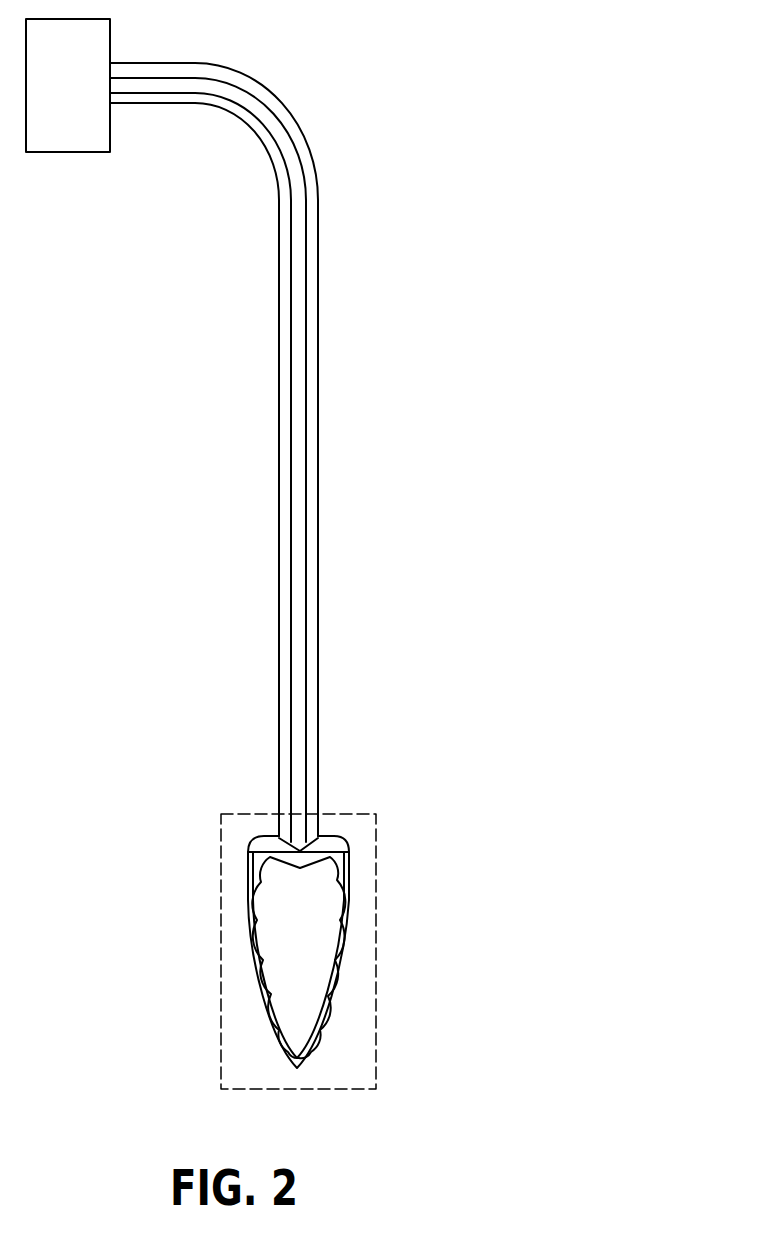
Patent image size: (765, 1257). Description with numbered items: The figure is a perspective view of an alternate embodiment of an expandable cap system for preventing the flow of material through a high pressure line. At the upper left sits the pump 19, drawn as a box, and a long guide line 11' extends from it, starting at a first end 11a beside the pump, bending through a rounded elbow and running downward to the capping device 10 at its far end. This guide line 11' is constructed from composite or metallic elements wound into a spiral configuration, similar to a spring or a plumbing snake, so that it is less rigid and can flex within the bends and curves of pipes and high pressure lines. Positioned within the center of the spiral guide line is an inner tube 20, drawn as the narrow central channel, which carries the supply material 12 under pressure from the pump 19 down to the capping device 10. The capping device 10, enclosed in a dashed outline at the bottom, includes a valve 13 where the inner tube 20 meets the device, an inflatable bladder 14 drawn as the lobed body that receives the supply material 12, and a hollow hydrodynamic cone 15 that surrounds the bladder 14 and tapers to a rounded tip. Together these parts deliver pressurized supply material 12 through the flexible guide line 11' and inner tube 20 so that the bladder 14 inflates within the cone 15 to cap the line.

The capping device 10 is at (220, 898).
The first end 11a is at (113, 88).
The guide line 11' is at (251, 449).
The supply material 12 is at (297, 498).
The valve 13 is at (323, 843).
The inflatable bladder 14 is at (285, 982).
The hollow hydrodynamic cone 15 is at (347, 923).
The pump 19 is at (85, 104).
The inner tube 20 is at (307, 370).